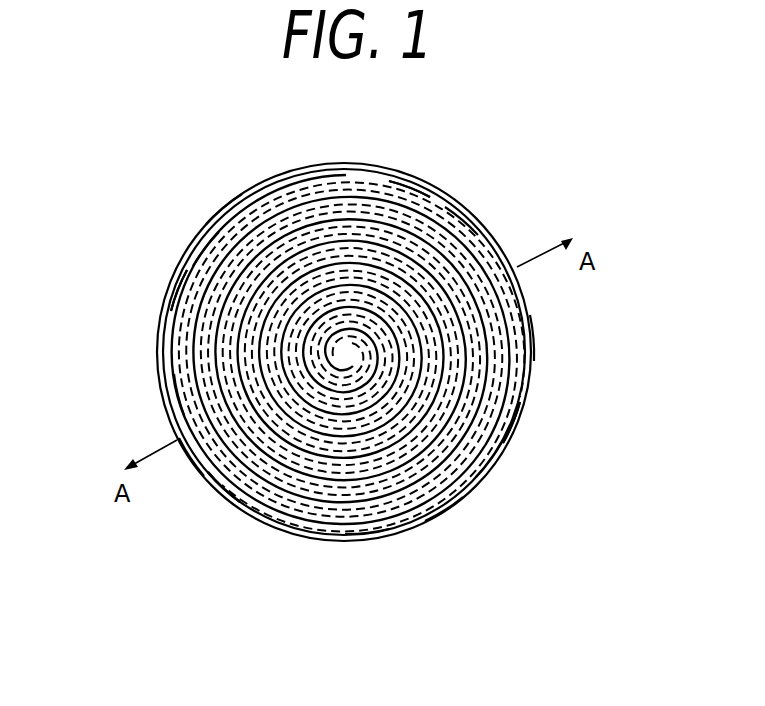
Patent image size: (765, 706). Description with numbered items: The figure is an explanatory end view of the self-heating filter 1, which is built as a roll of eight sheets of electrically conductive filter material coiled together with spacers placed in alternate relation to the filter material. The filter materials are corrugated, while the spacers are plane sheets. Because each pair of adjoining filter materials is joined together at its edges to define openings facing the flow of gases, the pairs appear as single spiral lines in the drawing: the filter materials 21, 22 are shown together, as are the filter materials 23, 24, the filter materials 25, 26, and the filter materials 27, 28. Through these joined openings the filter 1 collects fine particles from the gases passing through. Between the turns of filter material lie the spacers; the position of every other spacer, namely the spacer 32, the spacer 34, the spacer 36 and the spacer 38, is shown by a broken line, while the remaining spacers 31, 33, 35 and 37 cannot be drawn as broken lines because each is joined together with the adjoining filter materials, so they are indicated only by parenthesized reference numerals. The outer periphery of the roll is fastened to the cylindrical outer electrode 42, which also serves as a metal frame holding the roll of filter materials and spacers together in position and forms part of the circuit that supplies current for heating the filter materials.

The self-heating filter 1 is at (262, 180).
The filter material sheet 21 is at (410, 188).
The filter material sheet 22 is at (410, 188).
The filter material sheet 23 is at (513, 423).
The filter material sheet 24 is at (513, 423).
The filter material sheet 25 is at (223, 488).
The filter material sheet 26 is at (223, 488).
The filter material sheet 27 is at (180, 288).
The filter material sheet 28 is at (180, 288).
The spacer 31 is at (462, 220).
The spacer 32 is at (533, 338).
The spacer 33 is at (490, 460).
The spacer 34 is at (365, 533).
The spacer 35 is at (190, 458).
The spacer 36 is at (178, 395).
The spacer 37 is at (205, 248).
The spacer 38 is at (223, 208).
The cylindrical outer electrode 42 is at (445, 510).